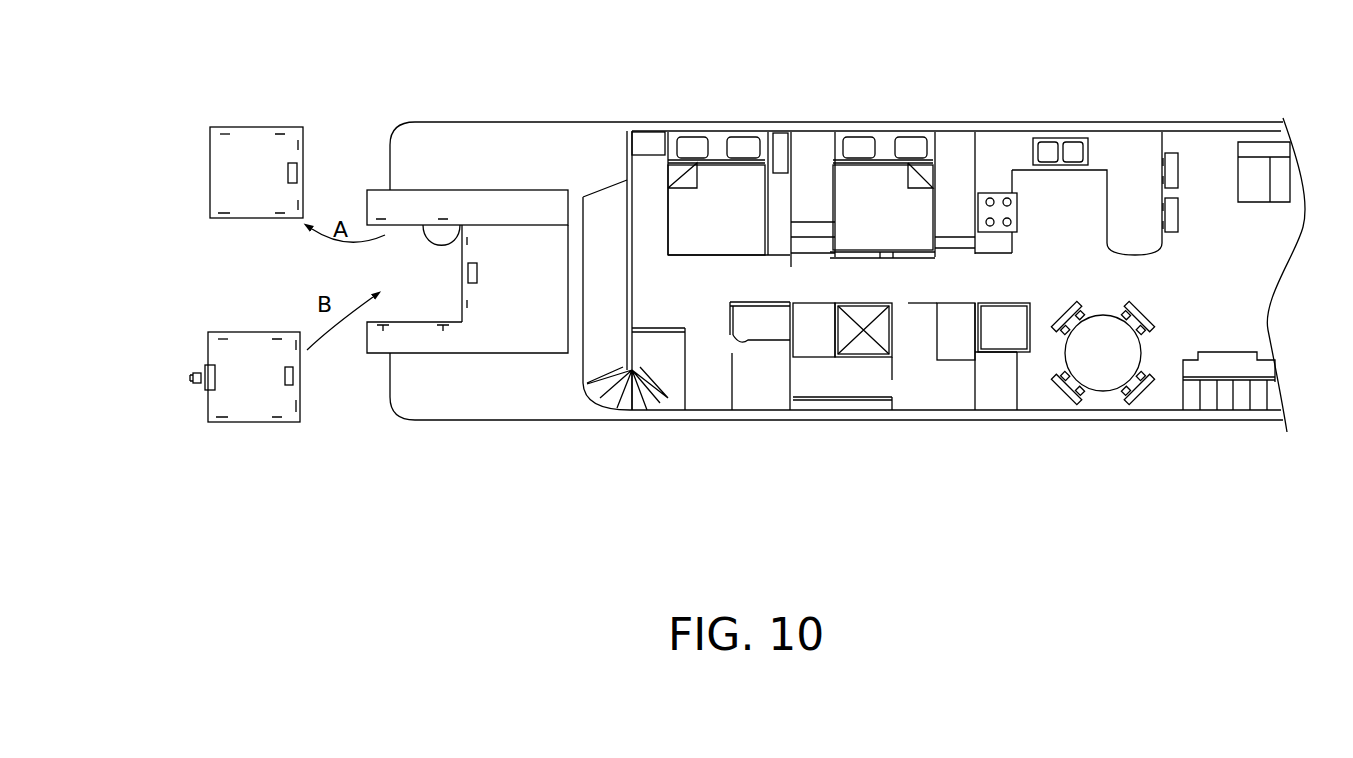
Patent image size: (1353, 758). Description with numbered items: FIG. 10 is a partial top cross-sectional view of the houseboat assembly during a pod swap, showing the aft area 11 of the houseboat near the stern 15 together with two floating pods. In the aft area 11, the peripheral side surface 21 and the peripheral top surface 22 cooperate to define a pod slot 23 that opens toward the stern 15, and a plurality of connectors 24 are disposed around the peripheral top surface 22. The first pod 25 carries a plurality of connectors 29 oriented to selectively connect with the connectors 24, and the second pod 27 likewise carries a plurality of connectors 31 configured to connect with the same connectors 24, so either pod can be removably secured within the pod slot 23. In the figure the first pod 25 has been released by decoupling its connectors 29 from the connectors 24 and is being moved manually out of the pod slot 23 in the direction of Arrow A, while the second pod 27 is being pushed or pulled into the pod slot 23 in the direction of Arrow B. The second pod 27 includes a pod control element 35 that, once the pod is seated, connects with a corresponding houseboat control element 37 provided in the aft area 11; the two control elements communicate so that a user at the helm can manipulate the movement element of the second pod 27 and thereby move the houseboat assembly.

The aft area 11 is at (362, 148).
The stern 15 is at (403, 133).
The peripheral side surface 21 is at (457, 225).
The peripheral top surface 22 is at (418, 203).
The pod slot 23 is at (434, 289).
The connectors 24 is at (378, 330).
The first pod 25 is at (250, 140).
The second pod 27 is at (245, 388).
The connectors 29 is at (222, 137).
The connectors 31 is at (222, 335).
The pod control element 35 is at (297, 378).
The houseboat control element 37 is at (480, 273).